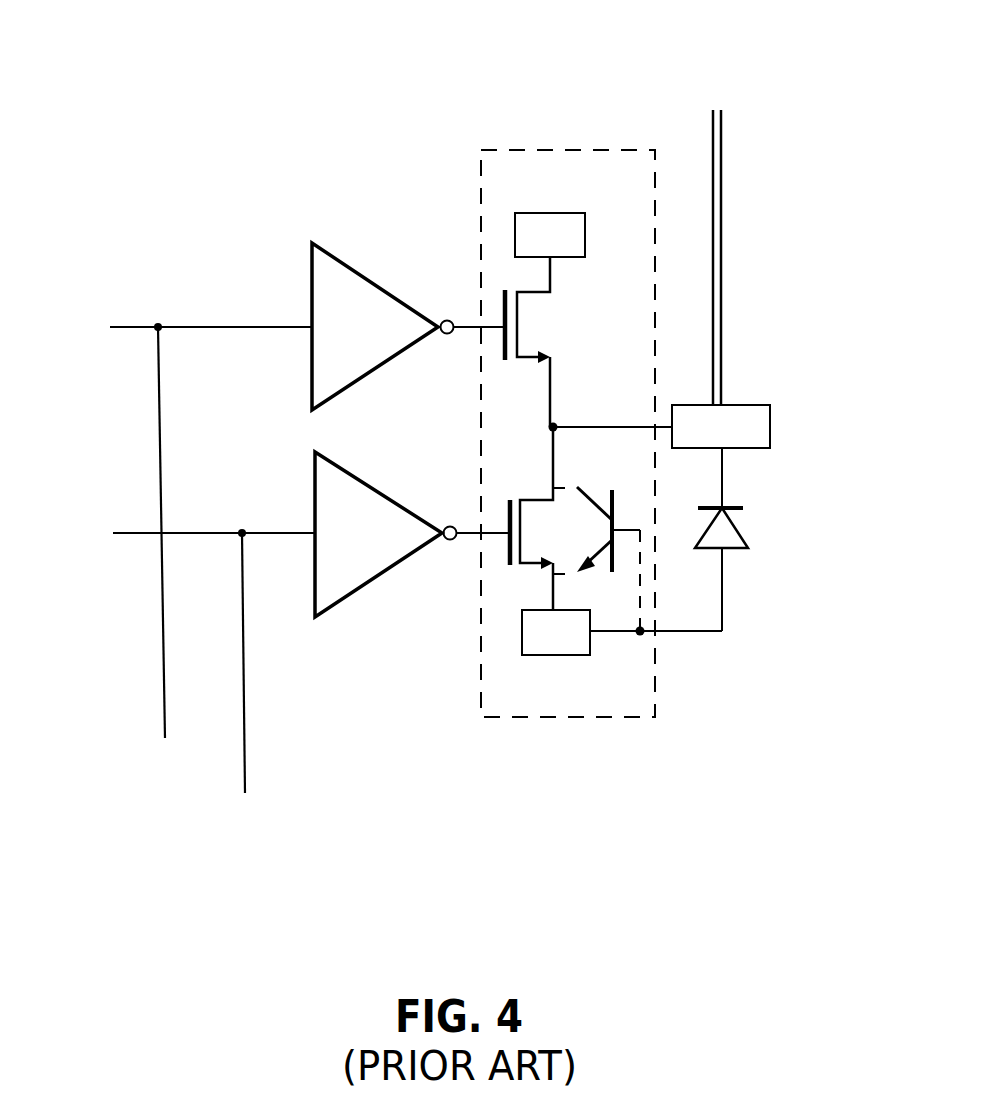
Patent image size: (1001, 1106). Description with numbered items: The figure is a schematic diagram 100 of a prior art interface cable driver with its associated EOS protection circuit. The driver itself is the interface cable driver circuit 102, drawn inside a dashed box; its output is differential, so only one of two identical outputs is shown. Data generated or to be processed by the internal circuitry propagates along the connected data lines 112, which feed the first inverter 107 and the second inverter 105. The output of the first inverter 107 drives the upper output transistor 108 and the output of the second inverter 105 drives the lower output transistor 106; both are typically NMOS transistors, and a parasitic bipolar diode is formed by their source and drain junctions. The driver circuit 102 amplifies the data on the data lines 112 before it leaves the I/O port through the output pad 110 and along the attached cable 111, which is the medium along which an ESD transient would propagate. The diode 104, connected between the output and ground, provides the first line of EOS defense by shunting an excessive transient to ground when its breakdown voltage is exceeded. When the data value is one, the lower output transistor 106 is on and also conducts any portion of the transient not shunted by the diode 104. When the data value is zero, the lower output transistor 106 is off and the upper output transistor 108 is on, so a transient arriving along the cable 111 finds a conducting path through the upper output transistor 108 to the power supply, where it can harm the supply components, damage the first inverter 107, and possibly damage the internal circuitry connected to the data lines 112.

The schematic diagram 100 is at (280, 58).
The interface cable driver circuit 102 is at (550, 705).
The diode 104 is at (743, 508).
The inverter 2 105 is at (375, 569).
The lower output transistor 106 is at (503, 553).
The inverter 1 107 is at (370, 362).
The upper output transistor 108 is at (505, 360).
The output pad 110 is at (770, 427).
The cable 111 is at (721, 138).
The data lines 112 is at (140, 328).